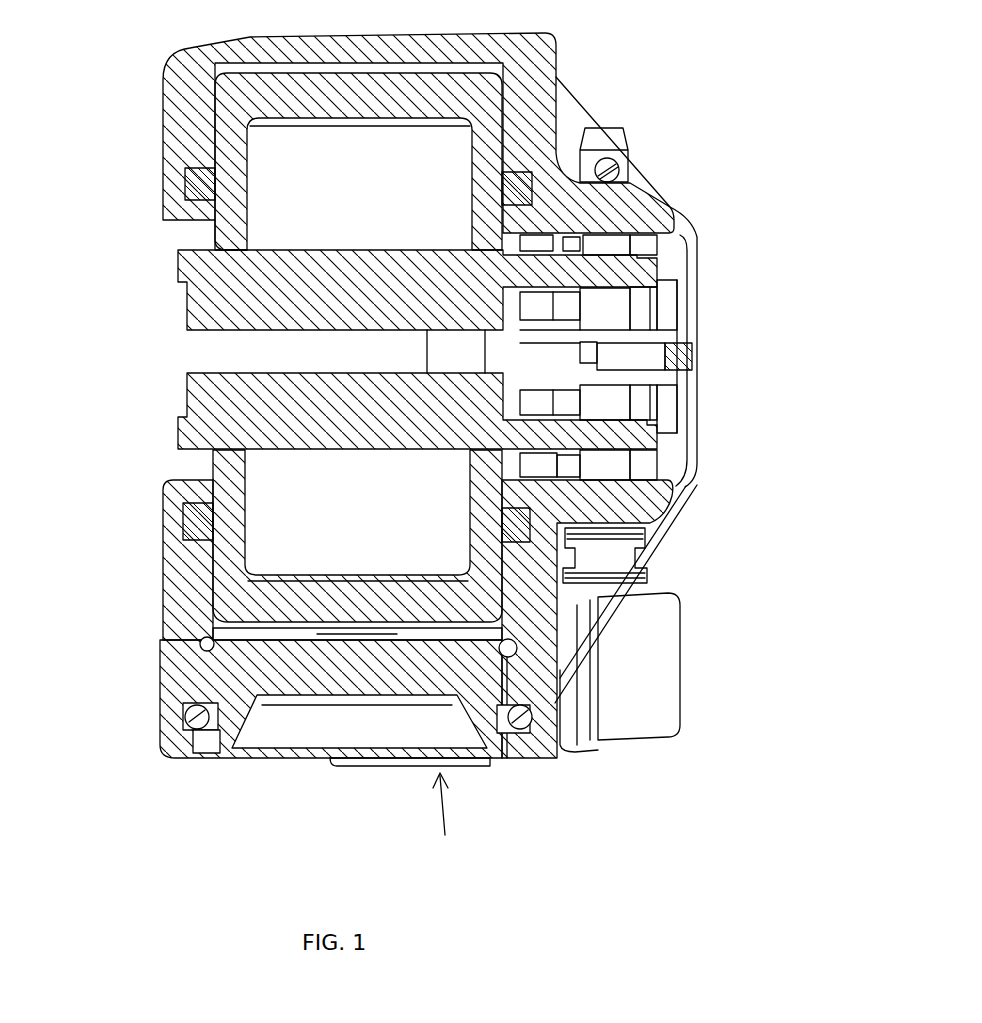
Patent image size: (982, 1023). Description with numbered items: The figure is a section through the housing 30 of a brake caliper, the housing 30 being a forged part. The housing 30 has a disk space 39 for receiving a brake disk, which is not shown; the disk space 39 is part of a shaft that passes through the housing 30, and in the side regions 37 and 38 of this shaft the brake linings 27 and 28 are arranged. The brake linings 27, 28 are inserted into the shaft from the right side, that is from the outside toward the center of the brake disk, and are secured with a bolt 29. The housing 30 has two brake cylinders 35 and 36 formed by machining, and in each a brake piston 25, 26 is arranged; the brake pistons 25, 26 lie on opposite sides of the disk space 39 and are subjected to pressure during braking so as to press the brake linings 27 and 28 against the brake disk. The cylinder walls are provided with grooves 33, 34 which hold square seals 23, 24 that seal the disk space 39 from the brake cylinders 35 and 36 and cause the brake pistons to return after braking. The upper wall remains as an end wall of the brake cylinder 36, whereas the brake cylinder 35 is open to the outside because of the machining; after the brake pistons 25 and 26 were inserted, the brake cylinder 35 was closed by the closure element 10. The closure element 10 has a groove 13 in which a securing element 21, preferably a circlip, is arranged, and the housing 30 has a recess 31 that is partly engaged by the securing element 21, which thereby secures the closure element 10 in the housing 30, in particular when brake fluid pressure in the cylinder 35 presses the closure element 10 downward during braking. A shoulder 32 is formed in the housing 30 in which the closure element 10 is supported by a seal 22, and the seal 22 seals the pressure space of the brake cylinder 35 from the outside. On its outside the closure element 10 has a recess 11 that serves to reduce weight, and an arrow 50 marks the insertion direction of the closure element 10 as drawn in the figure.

The closure element 10 is at (505, 745).
The recess 11 is at (363, 735).
The groove 13 is at (209, 730).
The securing element 21 is at (188, 715).
The seal 22 is at (200, 643).
The square seal 23 is at (194, 519).
The square seal 24 is at (188, 183).
The brake piston 25 is at (225, 465).
The brake piston 26 is at (227, 237).
The brake lining 27 is at (205, 382).
The brake lining 28 is at (212, 305).
The bolt 29 is at (615, 300).
The housing 30 is at (535, 53).
The recess 31 is at (528, 725).
The shoulder 32 is at (516, 645).
The groove 33 is at (533, 523).
The groove 34 is at (533, 192).
The brake cylinder 35 is at (218, 622).
The brake cylinder 36 is at (500, 75).
The side region 37 is at (540, 378).
The side region 38 is at (672, 253).
The disk space 39 is at (325, 357).
The direction arrow 50 is at (446, 819).